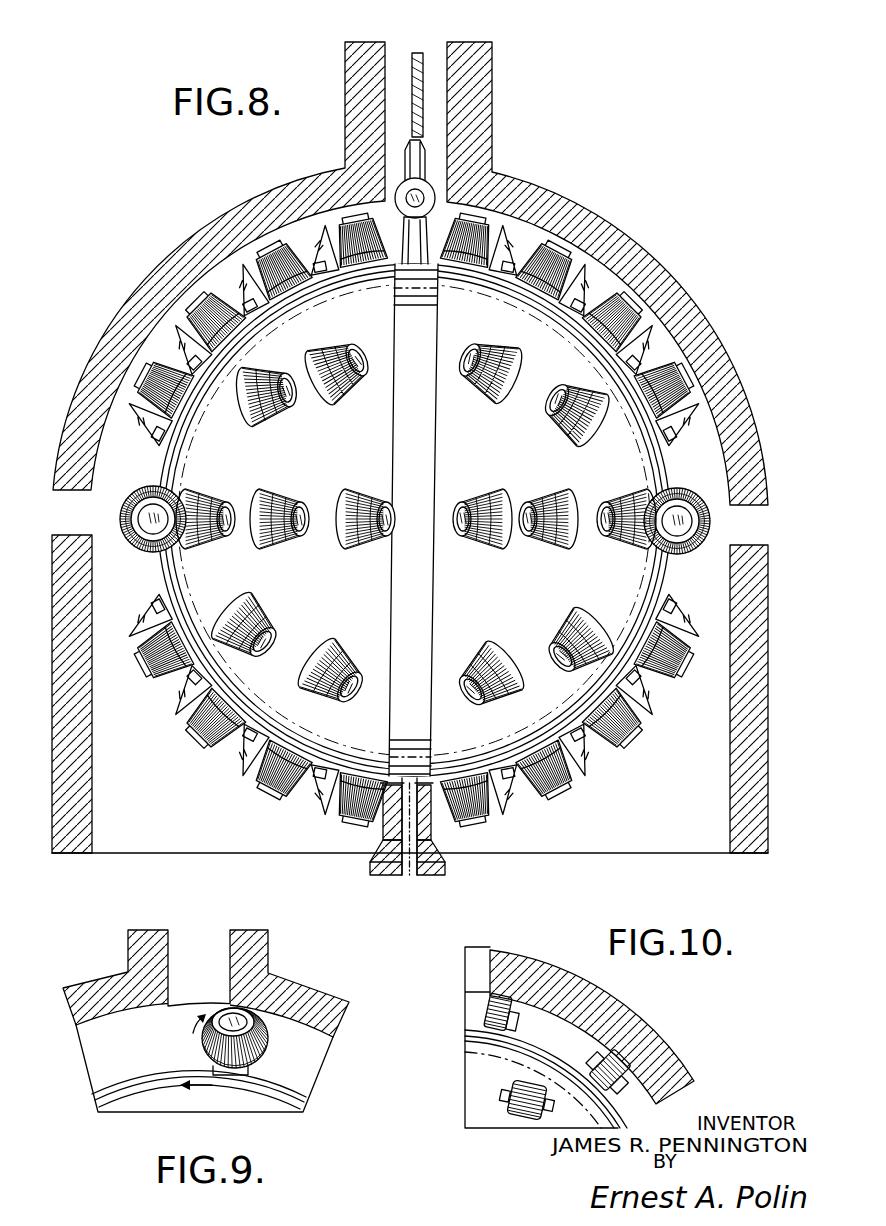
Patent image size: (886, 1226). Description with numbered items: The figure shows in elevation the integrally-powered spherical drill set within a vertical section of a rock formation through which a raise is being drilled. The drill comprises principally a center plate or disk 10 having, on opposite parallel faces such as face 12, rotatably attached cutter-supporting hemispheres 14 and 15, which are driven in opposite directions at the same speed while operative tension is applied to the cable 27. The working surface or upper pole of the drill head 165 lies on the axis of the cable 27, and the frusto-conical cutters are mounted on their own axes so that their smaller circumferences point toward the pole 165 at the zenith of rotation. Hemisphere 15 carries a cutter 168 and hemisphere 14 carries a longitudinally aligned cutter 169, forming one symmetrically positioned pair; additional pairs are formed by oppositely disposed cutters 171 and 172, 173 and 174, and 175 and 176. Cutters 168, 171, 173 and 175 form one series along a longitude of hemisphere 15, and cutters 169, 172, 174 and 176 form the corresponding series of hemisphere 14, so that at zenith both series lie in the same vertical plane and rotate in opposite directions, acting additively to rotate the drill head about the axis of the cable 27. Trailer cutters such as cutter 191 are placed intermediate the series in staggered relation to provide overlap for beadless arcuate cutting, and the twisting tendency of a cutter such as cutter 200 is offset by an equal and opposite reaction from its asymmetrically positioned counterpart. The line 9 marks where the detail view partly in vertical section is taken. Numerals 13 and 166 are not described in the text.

In FIG. 8, the section line 9— 9 is at (443, 137).
In FIG. 8, the center plate or disk 10 is at (424, 429).
In FIG. 8, the face 12 is at (729, 527).
In FIG. 8, the outlet passage 13 is at (108, 518).
In FIG. 8, the cutter-supporting hemisphere 14 is at (352, 456).
In FIG. 8, the cutter-supporting hemisphere 15 is at (484, 456).
In FIG. 9, the cutter-supporting hemisphere 15 is at (133, 1106).
In FIG. 8, the cable 27 is at (424, 80).
In FIG. 8, the upper pole of the drill head 165 is at (490, 171).
In FIG. 8, the bottom nozzle 166 is at (412, 778).
In FIG. 8, the cutter 168 is at (521, 185).
In FIG. 9, the cutter 168 is at (266, 1046).
In FIG. 8, the cutter 169 is at (352, 208).
In FIG. 8, the cutter 171 is at (588, 218).
In FIG. 8, the cutter 172 is at (273, 233).
In FIG. 8, the cutter 173 is at (668, 283).
In FIG. 8, the cutter 174 is at (190, 290).
In FIG. 8, the cutter 175 is at (695, 378).
In FIG. 8, the cutter 176 is at (138, 368).
In FIG. 8, the trailer cutter 191 is at (494, 348).
In FIG. 8, the cutter 200 is at (474, 550).